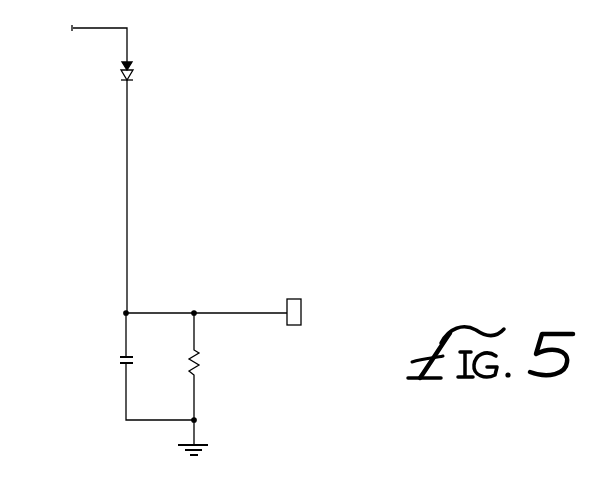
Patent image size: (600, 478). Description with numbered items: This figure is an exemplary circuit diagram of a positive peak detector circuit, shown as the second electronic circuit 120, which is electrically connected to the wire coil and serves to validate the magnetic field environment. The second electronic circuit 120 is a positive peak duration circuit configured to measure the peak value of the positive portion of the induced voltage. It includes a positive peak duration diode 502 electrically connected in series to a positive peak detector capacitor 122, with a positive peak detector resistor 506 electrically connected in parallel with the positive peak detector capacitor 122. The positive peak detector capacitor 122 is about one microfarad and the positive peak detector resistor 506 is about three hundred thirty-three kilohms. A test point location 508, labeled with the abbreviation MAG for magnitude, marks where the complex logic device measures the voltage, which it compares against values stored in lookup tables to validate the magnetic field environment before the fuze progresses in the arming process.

The second electronic circuit 120 is at (320, 145).
The positive peak duration diode 502 is at (145, 76).
The positive peak detector capacitor 122 is at (100, 348).
The positive peak detector resistor 506 is at (224, 366).
The test point location 508 is at (295, 299).